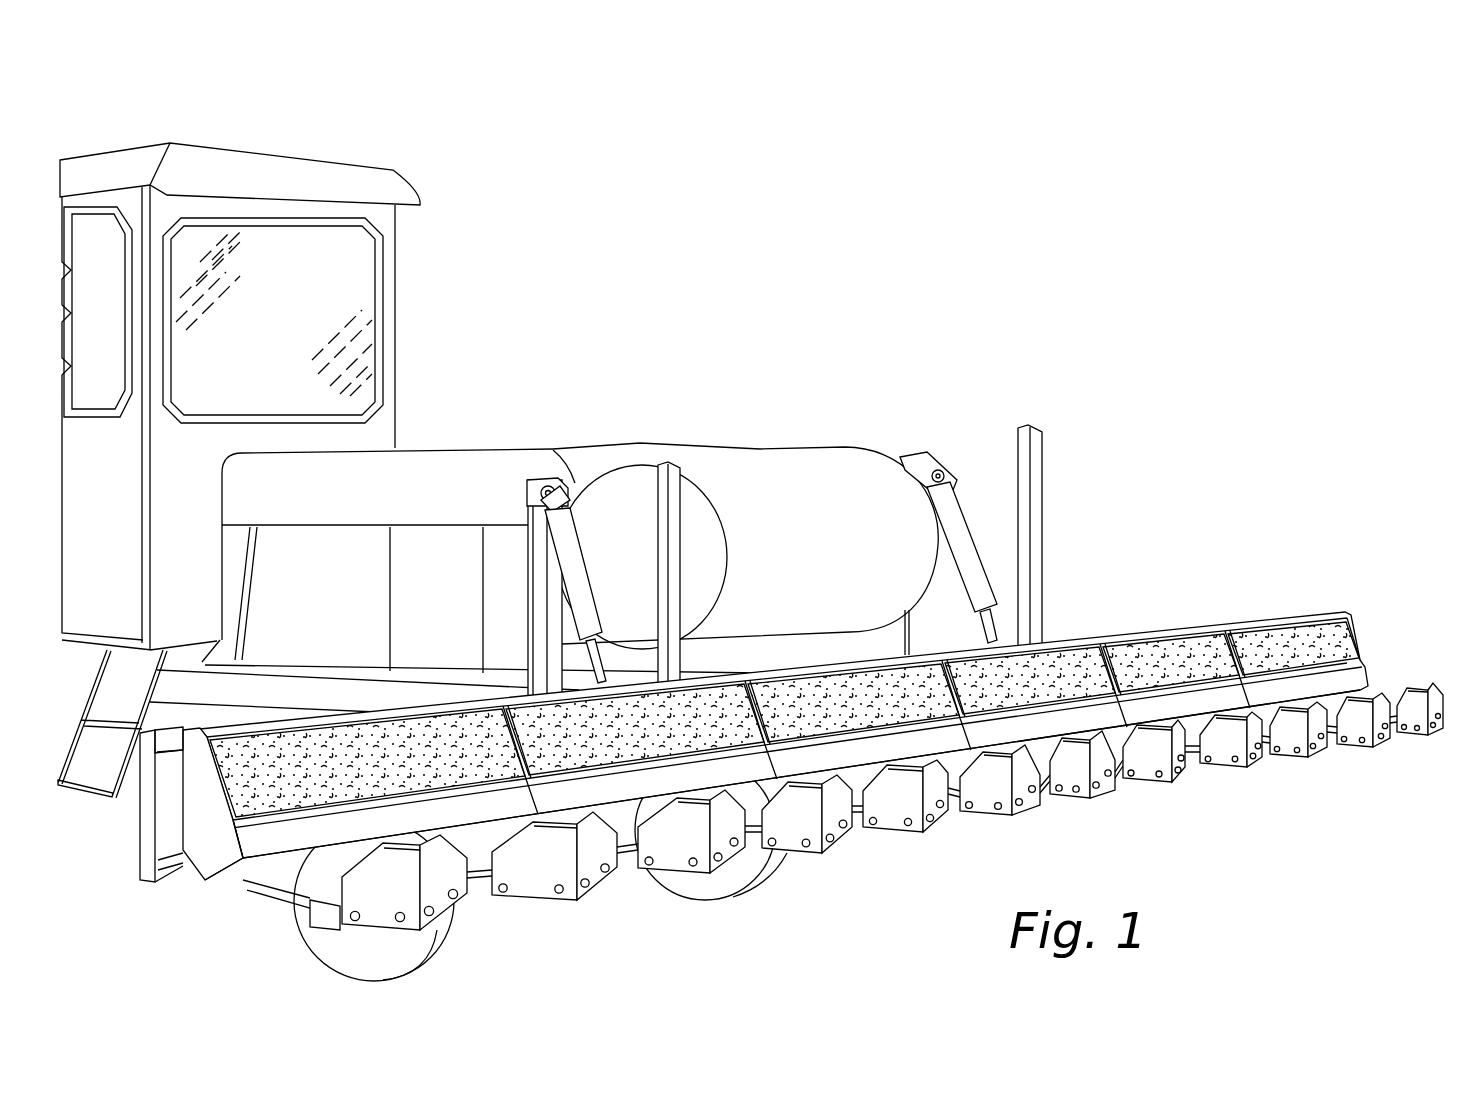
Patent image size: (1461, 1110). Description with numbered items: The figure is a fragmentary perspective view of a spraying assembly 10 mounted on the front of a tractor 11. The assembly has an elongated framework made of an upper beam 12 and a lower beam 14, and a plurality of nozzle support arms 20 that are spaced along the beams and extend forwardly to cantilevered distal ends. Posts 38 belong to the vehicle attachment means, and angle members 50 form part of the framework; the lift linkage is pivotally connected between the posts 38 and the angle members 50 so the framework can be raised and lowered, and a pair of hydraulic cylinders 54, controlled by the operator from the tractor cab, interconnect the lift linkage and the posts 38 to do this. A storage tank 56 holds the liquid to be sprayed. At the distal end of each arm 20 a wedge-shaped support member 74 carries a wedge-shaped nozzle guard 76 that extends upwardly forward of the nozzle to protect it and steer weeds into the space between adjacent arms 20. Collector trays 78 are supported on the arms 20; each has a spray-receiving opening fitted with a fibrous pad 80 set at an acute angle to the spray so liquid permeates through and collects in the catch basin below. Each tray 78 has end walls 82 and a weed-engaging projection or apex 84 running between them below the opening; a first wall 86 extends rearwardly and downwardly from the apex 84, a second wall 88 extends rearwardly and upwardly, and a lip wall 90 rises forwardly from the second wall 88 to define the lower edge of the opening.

The spraying assembly 10 is at (1182, 554).
The tractor 11 is at (650, 437).
The upper beam 12 is at (168, 740).
The lower beam 14 is at (167, 871).
The nozzle support arm 20 is at (273, 887).
The post 38 is at (538, 552).
The angle member 50 is at (675, 492).
The hydraulic cylinder 54 is at (578, 578).
The storage tank 56 is at (840, 455).
The wedge-shaped support member 74 is at (317, 912).
The wedge-shaped nozzle guard 76 is at (598, 877).
The collector tray 78 is at (1208, 619).
The fibrous pad 80 is at (350, 745).
The end wall 82 is at (203, 838).
The projection or apex 84 is at (243, 861).
The first wall 86 is at (470, 837).
The second wall 88 is at (630, 788).
The lip wall 90 is at (287, 811).